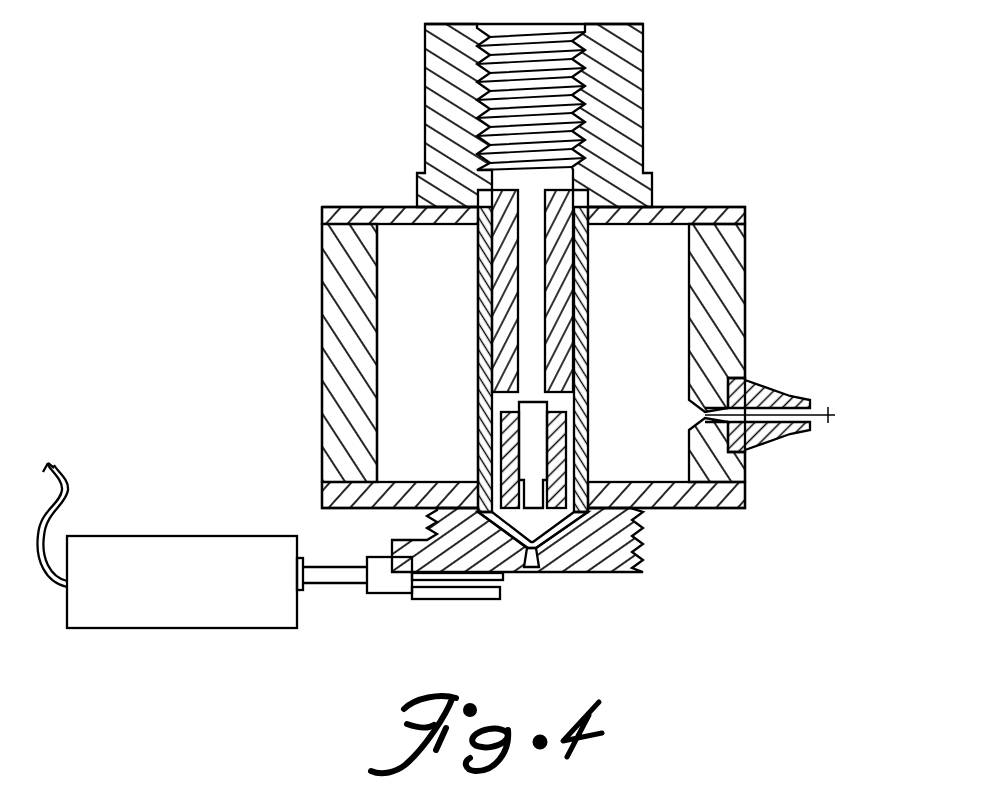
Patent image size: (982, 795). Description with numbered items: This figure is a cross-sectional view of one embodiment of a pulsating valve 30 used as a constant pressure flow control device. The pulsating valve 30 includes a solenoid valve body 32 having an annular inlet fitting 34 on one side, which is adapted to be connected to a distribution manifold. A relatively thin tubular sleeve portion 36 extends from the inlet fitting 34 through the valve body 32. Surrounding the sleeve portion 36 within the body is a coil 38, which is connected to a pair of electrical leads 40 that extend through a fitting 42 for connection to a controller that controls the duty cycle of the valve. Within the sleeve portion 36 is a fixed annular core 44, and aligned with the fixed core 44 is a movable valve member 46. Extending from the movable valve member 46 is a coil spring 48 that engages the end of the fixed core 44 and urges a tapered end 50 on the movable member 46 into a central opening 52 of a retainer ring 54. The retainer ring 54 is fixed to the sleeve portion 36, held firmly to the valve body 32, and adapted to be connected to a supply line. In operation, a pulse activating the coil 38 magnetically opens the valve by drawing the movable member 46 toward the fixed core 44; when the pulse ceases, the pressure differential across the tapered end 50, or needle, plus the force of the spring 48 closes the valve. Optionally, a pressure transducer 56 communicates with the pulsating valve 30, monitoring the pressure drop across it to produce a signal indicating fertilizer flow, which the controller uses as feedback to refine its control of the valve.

The pulsating valve 30 is at (393, 201).
The solenoid valve body 32 is at (716, 207).
The annular inlet fitting 34 is at (648, 52).
The tubular sleeve portion 36 is at (477, 260).
The coil 38 is at (393, 330).
The electrical leads 40 is at (820, 412).
The fitting 42 is at (782, 392).
The fixed annular core 44 is at (493, 372).
The movable valve member 46 is at (505, 445).
The coil spring 48 is at (540, 440).
The tapered end 50 is at (531, 557).
The central opening 52 is at (545, 560).
The retainer ring 54 is at (648, 508).
The pressure transducer 56 is at (160, 536).